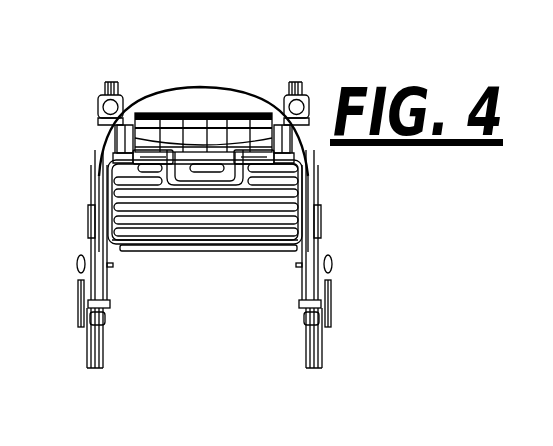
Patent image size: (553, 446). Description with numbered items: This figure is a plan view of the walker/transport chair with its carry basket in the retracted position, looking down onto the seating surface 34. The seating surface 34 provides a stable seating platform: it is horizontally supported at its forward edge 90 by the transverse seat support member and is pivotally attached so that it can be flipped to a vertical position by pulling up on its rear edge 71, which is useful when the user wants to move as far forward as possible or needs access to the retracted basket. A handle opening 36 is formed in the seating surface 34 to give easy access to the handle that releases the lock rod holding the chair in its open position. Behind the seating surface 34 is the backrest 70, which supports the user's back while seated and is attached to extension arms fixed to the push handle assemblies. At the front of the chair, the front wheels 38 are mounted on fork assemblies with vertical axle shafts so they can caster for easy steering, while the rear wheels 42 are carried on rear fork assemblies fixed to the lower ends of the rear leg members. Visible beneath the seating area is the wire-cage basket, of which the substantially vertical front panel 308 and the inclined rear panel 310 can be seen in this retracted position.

The seating surface 34 is at (170, 217).
The handle opening 36 is at (225, 182).
The front wheels 38 is at (110, 80).
The rear wheels 42 is at (322, 370).
The backrest 70 is at (184, 86).
The rear edge 71 is at (193, 250).
The forward edge 90 is at (152, 153).
The front panel 308 is at (213, 112).
The rear panel 310 is at (210, 251).